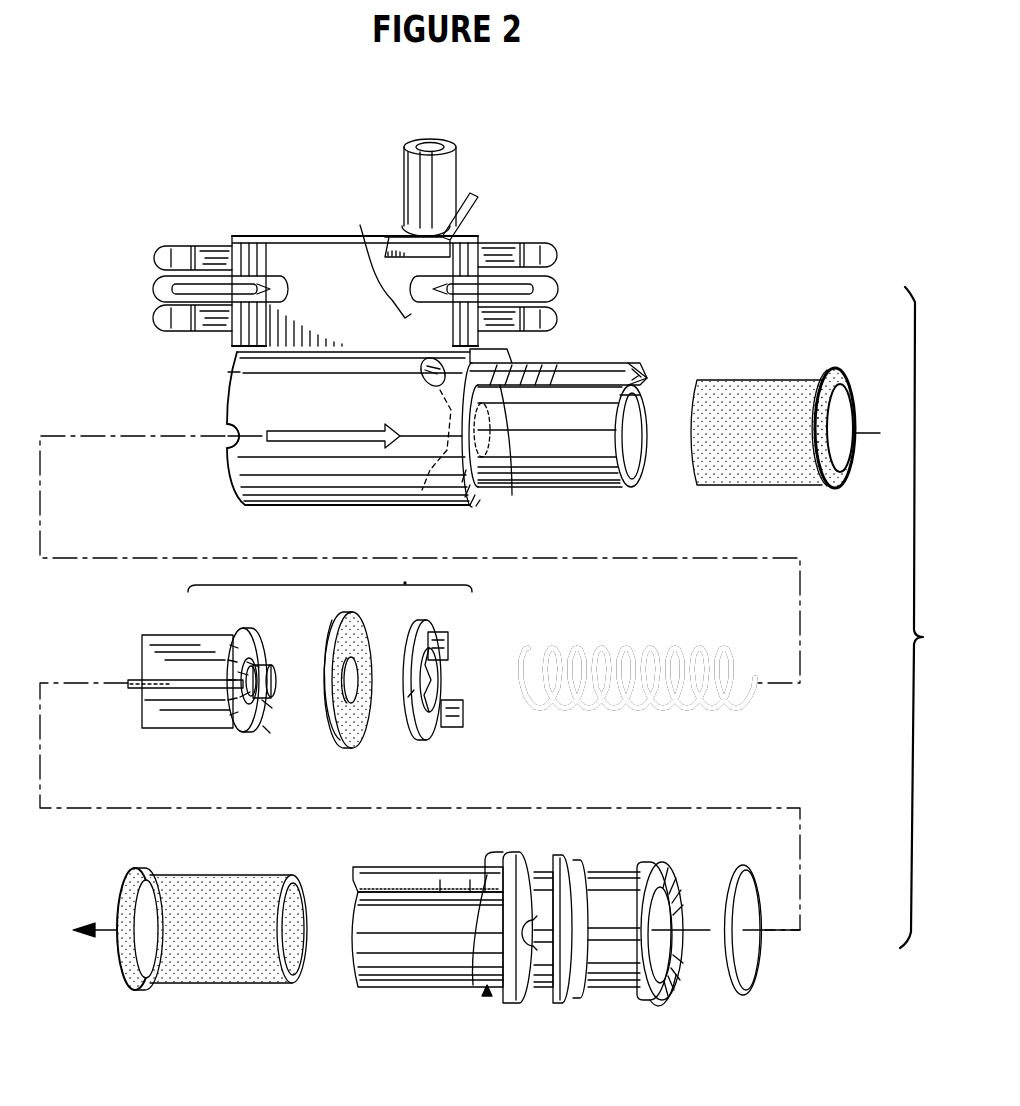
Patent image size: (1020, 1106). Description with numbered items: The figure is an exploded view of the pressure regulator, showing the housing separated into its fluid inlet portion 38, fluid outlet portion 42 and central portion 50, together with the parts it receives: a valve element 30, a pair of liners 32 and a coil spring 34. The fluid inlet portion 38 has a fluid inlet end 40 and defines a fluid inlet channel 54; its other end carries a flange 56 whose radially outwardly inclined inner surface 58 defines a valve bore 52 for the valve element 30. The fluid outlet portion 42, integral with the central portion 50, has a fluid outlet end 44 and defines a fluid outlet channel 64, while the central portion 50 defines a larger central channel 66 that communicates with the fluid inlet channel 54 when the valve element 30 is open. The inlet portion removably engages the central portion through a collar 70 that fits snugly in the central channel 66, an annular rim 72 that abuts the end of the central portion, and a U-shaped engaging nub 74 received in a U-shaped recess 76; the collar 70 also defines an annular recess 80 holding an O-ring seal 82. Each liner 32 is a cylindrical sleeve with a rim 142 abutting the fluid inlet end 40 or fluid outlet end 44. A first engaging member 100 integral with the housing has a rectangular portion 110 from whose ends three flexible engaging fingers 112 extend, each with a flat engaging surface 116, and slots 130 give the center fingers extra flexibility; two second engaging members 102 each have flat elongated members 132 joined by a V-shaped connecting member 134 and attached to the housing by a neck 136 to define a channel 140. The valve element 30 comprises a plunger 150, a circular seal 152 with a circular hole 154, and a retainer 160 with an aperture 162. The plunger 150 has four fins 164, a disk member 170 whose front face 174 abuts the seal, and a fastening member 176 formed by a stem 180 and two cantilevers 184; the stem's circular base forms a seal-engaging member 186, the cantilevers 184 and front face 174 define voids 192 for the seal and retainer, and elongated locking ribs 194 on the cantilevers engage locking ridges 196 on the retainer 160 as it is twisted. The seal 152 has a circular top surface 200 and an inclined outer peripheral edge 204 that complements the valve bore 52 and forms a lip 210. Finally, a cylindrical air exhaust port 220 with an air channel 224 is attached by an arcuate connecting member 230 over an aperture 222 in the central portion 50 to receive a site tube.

The valve element 30 is at (330, 576).
The liner 32 is at (735, 380).
The coil spring 34 is at (568, 648).
The fluid inlet portion 38 is at (487, 995).
The fluid inlet end 40 is at (357, 975).
The fluid outlet portion 42 is at (590, 488).
The fluid outlet end 44 is at (646, 465).
The central portion 50 is at (455, 497).
The valve bore 52 is at (670, 870).
The fluid inlet channel 54 is at (355, 900).
The flange 56 is at (640, 998).
The inner surface 58 is at (684, 985).
The fluid outlet channel 64 is at (650, 397).
The central channel 66 is at (228, 370).
The collar 70 is at (572, 860).
The annular rim 72 is at (530, 852).
The U-shaped engaging nub 74 is at (533, 948).
The U-shaped recess 76 is at (226, 428).
The annular recess 80 is at (590, 870).
The O-ring seal 82 is at (752, 870).
The first engaging member 100 is at (308, 238).
The second engaging member 102 is at (600, 368).
The rectangular portion 110 is at (323, 305).
The engaging finger 112 is at (153, 311).
The engaging surface 116 is at (205, 250).
The slot 130 is at (255, 262).
The elongated member 132 is at (645, 378).
The V-shaped connecting member 134 is at (500, 385).
The neck 136 is at (618, 488).
The channel 140 is at (620, 370).
The rim 142 is at (828, 368).
The plunger 150 is at (218, 735).
The circular seal 152 is at (346, 745).
The circular hole 154 is at (402, 652).
The retainer 160 is at (433, 742).
The aperture 162 is at (409, 698).
The fin 164 is at (145, 667).
The disk member 170 is at (250, 632).
The front face 174 is at (254, 660).
The fastening member 176 is at (268, 732).
The stem 180 is at (251, 698).
The cantilever 184 is at (257, 664).
The circular seal-engaging member 186 is at (240, 697).
The void 192 is at (273, 694).
The elongated locking rib 194 is at (240, 672).
The locking ridges 196 is at (446, 675).
The circular top surface 200 is at (370, 742).
The outer peripheral edge 204 is at (345, 618).
The lip 210 is at (273, 708).
The air exhaust port 220 is at (462, 172).
The aperture 222 is at (430, 388).
The air channel 224 is at (442, 140).
The arcuate connecting member 230 is at (397, 235).